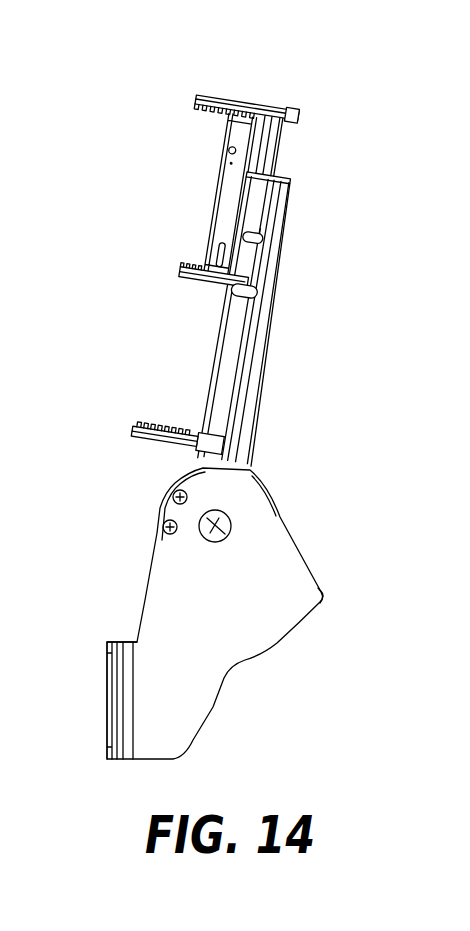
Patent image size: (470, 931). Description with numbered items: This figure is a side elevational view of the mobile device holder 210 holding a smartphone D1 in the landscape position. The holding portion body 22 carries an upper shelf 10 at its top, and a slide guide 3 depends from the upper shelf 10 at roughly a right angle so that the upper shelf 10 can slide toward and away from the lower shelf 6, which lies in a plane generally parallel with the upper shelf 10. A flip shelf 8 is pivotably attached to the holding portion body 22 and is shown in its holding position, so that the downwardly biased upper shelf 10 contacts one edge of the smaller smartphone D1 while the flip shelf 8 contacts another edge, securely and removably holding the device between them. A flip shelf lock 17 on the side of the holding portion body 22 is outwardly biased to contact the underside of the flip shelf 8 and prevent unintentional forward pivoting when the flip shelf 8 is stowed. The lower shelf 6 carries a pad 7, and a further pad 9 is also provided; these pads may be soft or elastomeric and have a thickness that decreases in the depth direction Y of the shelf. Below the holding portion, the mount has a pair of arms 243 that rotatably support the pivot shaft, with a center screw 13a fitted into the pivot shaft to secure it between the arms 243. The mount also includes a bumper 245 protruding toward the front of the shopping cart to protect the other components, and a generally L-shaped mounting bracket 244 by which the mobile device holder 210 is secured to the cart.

The mobile device holder 210 is at (369, 243).
The upper shelf 10 is at (218, 95).
The slide guide 3 is at (278, 152).
The smartphone D1 is at (225, 220).
The pad 9 is at (190, 268).
The flip shelf lock 17 is at (263, 238).
The flip shelf 8 is at (193, 284).
The pad 7 is at (152, 422).
The lower shelf 6 is at (159, 420).
The holding portion body 22 is at (256, 382).
The center screw 13a is at (221, 538).
The bumper 245 is at (322, 594).
The mounting bracket 244 is at (110, 703).
The arms 243 is at (200, 685).
The direction Y is at (186, 95).